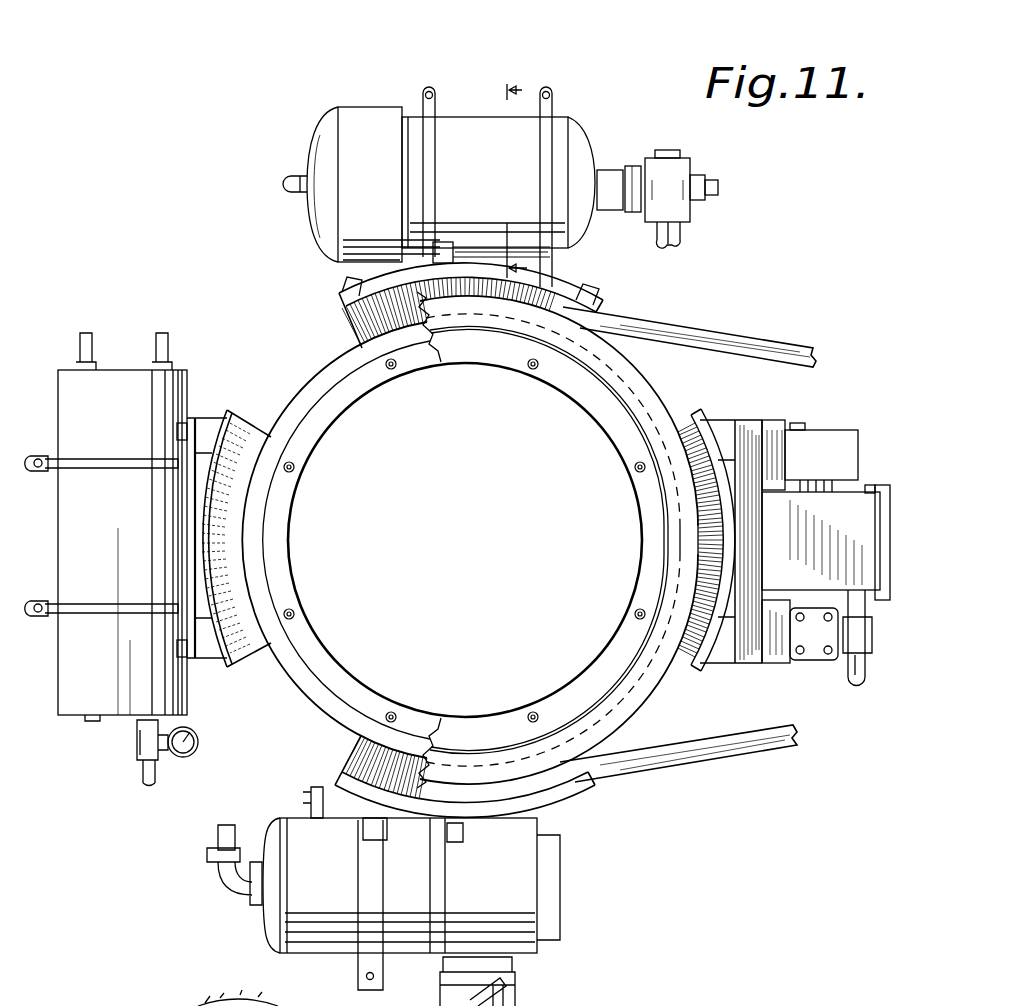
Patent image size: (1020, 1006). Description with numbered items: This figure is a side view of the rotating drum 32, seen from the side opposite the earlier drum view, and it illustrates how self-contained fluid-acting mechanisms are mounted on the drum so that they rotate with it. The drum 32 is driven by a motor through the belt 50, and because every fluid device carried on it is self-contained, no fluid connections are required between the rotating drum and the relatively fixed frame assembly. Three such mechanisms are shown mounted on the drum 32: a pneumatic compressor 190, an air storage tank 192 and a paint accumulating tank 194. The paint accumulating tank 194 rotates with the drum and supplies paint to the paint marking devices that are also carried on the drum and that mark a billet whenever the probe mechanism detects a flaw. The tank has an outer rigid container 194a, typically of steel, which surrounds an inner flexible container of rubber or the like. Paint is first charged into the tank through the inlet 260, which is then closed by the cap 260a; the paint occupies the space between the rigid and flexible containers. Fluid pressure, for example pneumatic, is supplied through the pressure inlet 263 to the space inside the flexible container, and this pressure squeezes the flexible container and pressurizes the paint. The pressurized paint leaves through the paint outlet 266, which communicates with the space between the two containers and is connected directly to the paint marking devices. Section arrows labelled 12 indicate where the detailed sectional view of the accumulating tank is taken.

The section line 12 is at (524, 178).
The drum 32 is at (238, 428).
The belt 50 is at (738, 338).
The pneumatic compressor 190 is at (525, 940).
The air storage tank 192 is at (136, 424).
The paint accumulating tank 194 is at (462, 125).
The outer rigid container 194a is at (168, 1003).
The inlet 260 is at (690, 185).
The cap 260a is at (720, 188).
The pressure inlet 263 is at (297, 176).
The paint outlet 266 is at (682, 237).